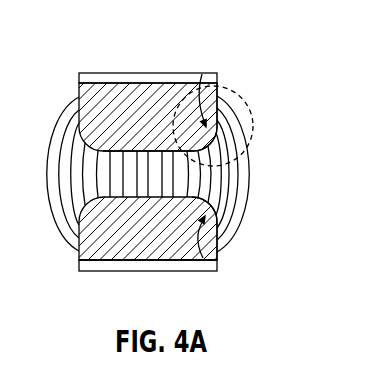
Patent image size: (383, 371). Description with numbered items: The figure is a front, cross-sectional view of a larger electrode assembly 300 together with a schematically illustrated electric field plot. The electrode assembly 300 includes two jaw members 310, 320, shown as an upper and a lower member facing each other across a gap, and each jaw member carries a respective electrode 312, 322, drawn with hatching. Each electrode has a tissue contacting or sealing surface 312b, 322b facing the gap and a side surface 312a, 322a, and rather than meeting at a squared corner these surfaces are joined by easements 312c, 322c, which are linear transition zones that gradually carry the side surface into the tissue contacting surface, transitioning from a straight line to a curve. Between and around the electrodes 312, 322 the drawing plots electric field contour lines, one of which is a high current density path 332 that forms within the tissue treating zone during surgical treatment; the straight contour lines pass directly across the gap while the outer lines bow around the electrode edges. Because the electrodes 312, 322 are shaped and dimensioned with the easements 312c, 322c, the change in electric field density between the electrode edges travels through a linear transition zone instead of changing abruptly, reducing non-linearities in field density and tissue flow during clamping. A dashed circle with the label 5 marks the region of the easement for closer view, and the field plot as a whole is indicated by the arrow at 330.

The electrode assembly 300 is at (217, 42).
The jaw member 310 is at (88, 72).
The electrode 312 is at (93, 110).
The side surface 312a is at (221, 115).
The tissue contacting surface 312b is at (212, 147).
The easement 312c is at (216, 79).
The detail region shown in FIG. 5 is at (252, 114).
The jaw member 320 is at (90, 272).
The electrode 322 is at (93, 243).
The side surface 322a is at (218, 238).
The tissue contacting surface 322b is at (222, 199).
The easement 322c is at (218, 264).
The magnetic field lines 330 is at (262, 179).
The electric field contour line 332 is at (238, 166).